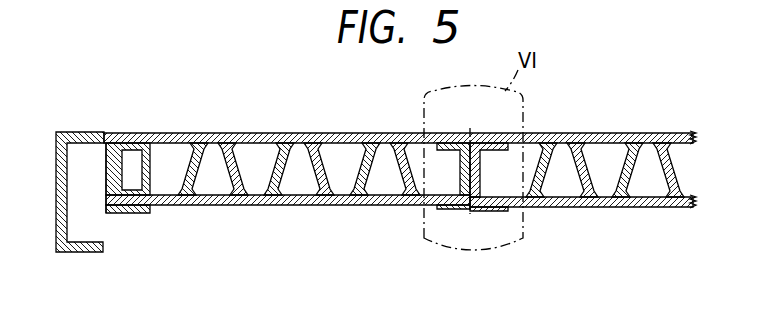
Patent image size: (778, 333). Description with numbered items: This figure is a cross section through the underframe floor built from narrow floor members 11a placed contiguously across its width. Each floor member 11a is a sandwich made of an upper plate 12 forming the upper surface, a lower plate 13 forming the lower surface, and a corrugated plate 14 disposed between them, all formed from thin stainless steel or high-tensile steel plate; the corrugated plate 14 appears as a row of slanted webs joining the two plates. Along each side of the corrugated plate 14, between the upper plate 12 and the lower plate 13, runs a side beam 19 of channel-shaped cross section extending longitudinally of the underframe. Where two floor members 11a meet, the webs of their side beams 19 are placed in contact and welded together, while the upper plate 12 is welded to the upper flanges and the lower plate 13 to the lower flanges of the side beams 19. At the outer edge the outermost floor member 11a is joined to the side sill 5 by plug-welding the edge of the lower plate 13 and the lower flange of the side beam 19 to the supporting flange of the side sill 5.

The side sill 5 is at (93, 252).
The floor member 11a is at (203, 134).
The upper plate 12 is at (254, 139).
The lower plate 13 is at (374, 199).
The corrugated plate 14 is at (283, 172).
The side beam 19 is at (150, 162).